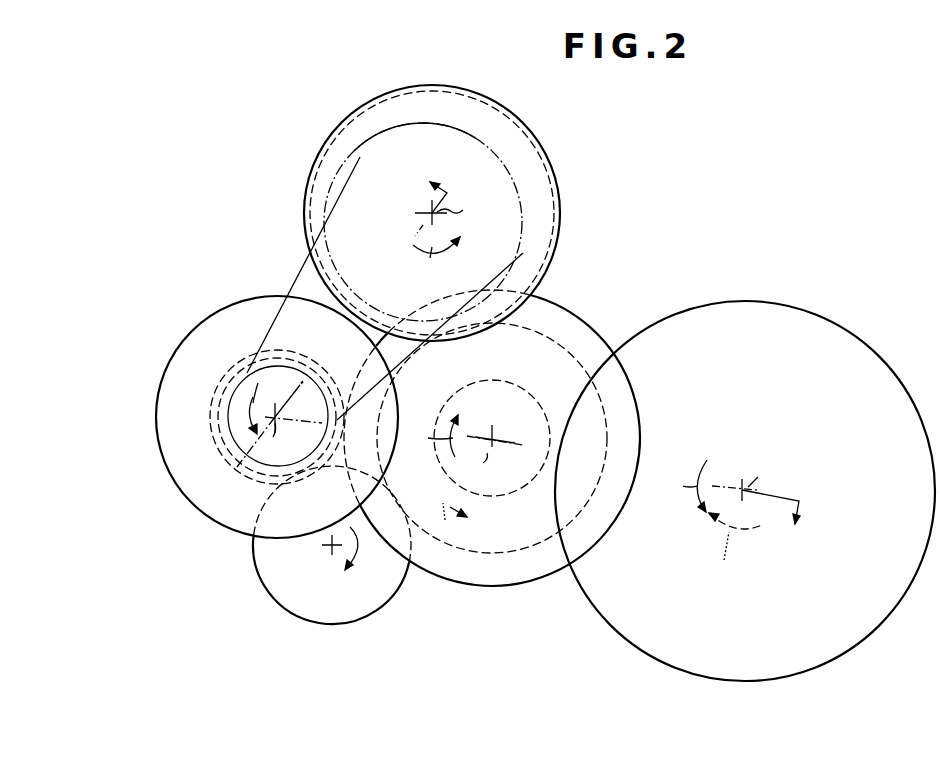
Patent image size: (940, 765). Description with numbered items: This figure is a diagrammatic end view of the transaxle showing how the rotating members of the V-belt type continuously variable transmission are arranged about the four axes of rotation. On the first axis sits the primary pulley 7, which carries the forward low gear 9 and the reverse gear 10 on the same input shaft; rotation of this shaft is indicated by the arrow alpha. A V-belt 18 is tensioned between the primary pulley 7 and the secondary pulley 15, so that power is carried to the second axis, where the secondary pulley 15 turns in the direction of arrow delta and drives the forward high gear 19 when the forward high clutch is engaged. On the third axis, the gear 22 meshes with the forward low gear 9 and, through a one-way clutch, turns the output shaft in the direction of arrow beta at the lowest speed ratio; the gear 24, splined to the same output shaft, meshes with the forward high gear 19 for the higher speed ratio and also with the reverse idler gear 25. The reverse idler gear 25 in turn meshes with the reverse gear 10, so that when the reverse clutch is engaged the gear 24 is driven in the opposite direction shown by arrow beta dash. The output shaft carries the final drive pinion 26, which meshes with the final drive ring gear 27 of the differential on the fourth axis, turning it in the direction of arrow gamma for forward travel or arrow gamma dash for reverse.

The primary pulley 7 is at (223, 532).
The forward low gear 9 is at (223, 462).
The reverse gear 10 is at (208, 426).
The secondary pulley 15 is at (550, 158).
The V-belt 18 is at (290, 283).
The forward high gear 19 is at (442, 92).
The gear 22 is at (571, 308).
The gear 24 is at (564, 350).
The reverse idler gear 25 is at (347, 625).
The final drive pinion 26 is at (503, 497).
The final drive ring gear 27 is at (880, 351).